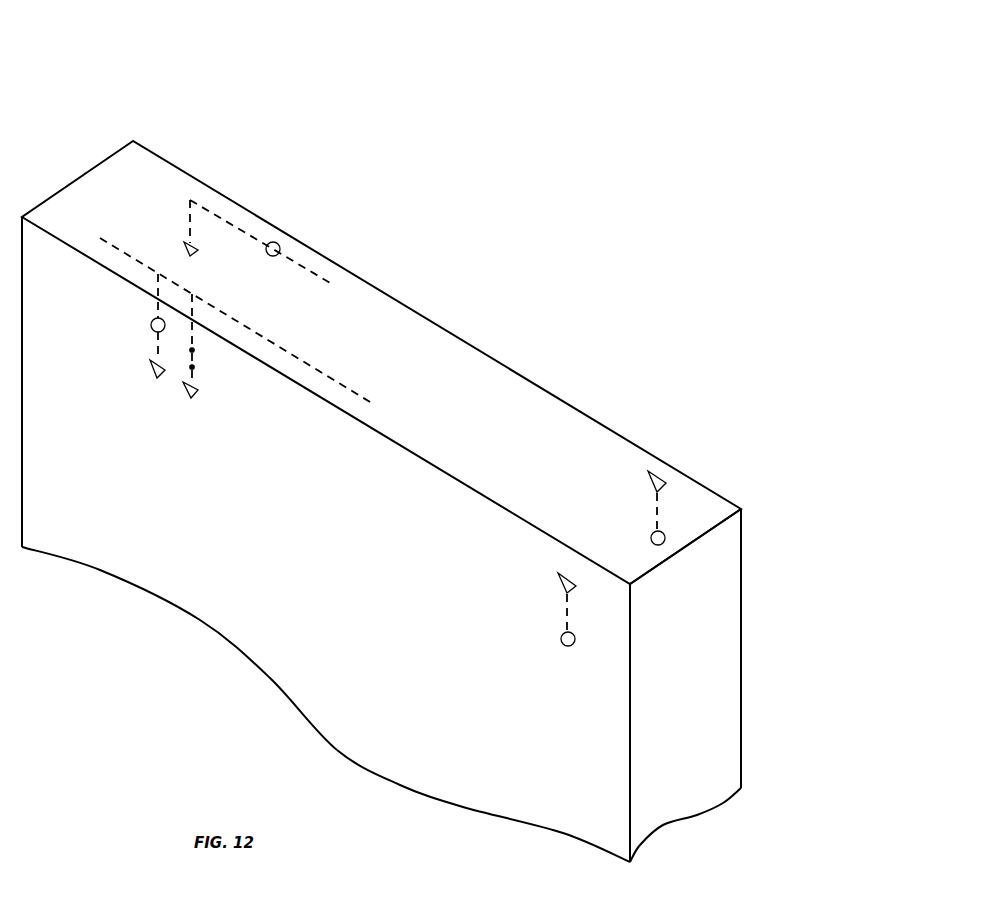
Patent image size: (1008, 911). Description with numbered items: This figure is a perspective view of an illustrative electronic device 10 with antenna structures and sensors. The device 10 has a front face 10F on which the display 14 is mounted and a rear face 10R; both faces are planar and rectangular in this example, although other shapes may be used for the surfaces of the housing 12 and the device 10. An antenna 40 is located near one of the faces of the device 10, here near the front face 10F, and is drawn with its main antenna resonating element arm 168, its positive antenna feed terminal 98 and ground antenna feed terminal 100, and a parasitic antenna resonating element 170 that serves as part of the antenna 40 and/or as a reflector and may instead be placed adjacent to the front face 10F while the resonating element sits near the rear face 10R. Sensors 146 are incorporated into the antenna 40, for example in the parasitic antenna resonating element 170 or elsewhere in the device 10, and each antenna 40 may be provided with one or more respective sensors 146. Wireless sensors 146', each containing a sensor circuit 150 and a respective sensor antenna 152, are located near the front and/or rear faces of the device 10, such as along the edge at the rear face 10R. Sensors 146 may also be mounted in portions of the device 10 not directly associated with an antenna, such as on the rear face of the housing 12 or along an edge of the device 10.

The electronic device 10 is at (62, 63).
The housing 12 is at (722, 698).
The display 14 is at (243, 616).
The front face 10F is at (441, 739).
The rear face 10R is at (728, 473).
The antenna 40 is at (141, 318).
The positive antenna feed terminal 98 is at (195, 350).
The ground antenna feed terminal 100 is at (195, 368).
The sensors 146 is at (210, 285).
The wireless sensors 146' is at (577, 563).
The sensor circuits 150 is at (661, 545).
The sensor antennas 152 is at (659, 491).
The main antenna resonating element arm 168 is at (239, 327).
The parasitic antenna resonating element 170 is at (236, 221).